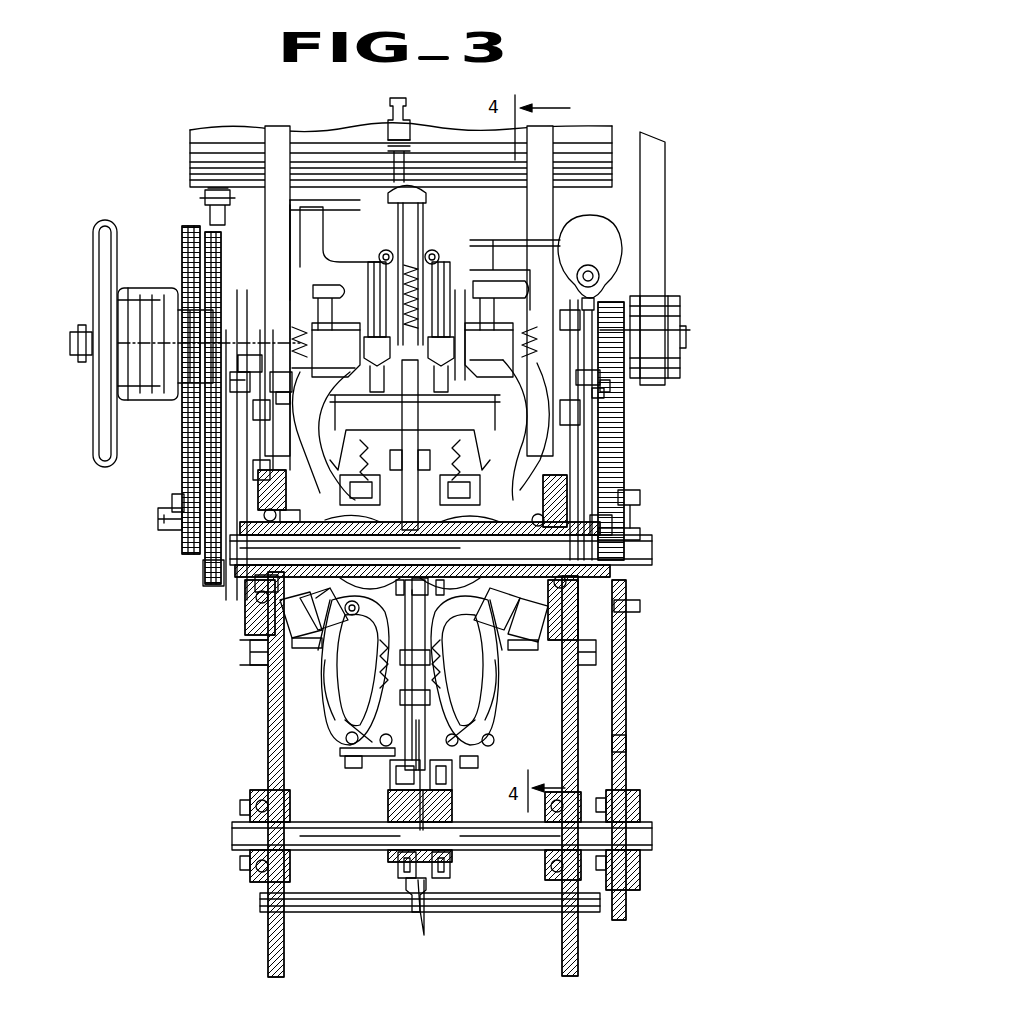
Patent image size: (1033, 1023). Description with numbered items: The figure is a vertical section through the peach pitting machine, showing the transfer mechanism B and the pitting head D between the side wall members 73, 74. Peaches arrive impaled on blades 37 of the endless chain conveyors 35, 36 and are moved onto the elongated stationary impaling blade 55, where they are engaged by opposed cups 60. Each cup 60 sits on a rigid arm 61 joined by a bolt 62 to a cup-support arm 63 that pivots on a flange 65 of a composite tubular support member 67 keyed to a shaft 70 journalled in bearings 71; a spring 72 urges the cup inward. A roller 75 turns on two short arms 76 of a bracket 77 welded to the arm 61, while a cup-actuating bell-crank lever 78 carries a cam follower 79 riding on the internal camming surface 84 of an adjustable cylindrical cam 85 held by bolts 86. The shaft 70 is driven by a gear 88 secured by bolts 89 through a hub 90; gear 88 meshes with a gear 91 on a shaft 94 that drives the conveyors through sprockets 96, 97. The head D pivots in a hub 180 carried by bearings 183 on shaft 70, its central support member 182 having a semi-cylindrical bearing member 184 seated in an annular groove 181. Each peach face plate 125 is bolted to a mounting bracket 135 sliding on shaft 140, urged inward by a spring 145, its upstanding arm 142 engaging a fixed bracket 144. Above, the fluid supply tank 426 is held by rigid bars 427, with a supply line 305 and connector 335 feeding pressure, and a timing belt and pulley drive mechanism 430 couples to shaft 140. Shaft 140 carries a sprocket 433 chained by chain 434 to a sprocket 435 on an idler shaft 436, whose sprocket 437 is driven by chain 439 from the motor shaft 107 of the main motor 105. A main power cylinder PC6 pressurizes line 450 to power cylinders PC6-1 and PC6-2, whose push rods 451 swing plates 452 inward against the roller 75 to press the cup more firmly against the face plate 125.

The supply line 305 is at (398, 104).
The rigid bars 427 is at (276, 148).
The fluid supply tank 426 is at (205, 151).
The timing belt and pulley drive mechanism 430 is at (666, 206).
The main motor 105 is at (293, 228).
The motor shaft 107 is at (200, 300).
The bracket 144 is at (297, 266).
The upstanding arm 142 is at (322, 296).
The connector 335 is at (378, 273).
The pitting head D is at (455, 278).
The main power cylinder PC6 is at (612, 252).
The line 450 is at (590, 300).
The sprocket 433 is at (178, 334).
The spring 145 is at (300, 339).
The mounting bracket 135 is at (414, 347).
The shaft 140 is at (676, 336).
The roller 75 is at (300, 372).
The power cylinder PC6-1 is at (583, 378).
The power cylinder PC6-2 is at (237, 383).
The push rod 451 is at (282, 400).
The plate 452 is at (287, 378).
The peach face plate 125 is at (463, 435).
The semi-cylindrical bearing member 184 is at (408, 458).
The central body or support member 182 is at (422, 478).
The gear 88 is at (606, 442).
The bolts 89 is at (627, 495).
The chain 434 is at (188, 460).
The sprocket 435 is at (178, 500).
The idler shaft 436 is at (158, 520).
The bolts 86 is at (265, 500).
The bearings 71 is at (600, 520).
The hub 90 is at (638, 529).
The shaft 70 is at (625, 548).
The cam follower 79 is at (268, 538).
The composite tubular support member 67 is at (343, 577).
The hub 180 is at (398, 580).
The bearings 183 is at (420, 569).
The annular groove 181 is at (442, 580).
The sprocket 437 is at (205, 563).
The chain 439 is at (204, 578).
The internal camming surface 84 is at (282, 612).
The adjustable cylindrical cam 85 is at (292, 628).
The flange 65 is at (338, 632).
The cup-actuating bell-crank lever 78 is at (348, 648).
The cup-support arm 63 is at (322, 686).
The spring 72 is at (416, 664).
The elongated stationary impaling blade 55 is at (428, 672).
The cups 60 is at (395, 700).
The rigid arm 61 is at (345, 706).
The blades 37 is at (416, 724).
The bolt 62 is at (345, 740).
The side wall member 73 is at (268, 699).
The side wall member 74 is at (568, 730).
The gear 91 is at (628, 740).
The transfer mechanism B is at (322, 725).
The short arms 76 is at (350, 765).
The bracket 77 is at (462, 752).
The endless chain conveyor 35 is at (392, 777).
The sprocket 96 is at (388, 800).
The sprocket 97 is at (430, 862).
The endless chain conveyor 36 is at (430, 875).
The shaft 94 is at (636, 831).